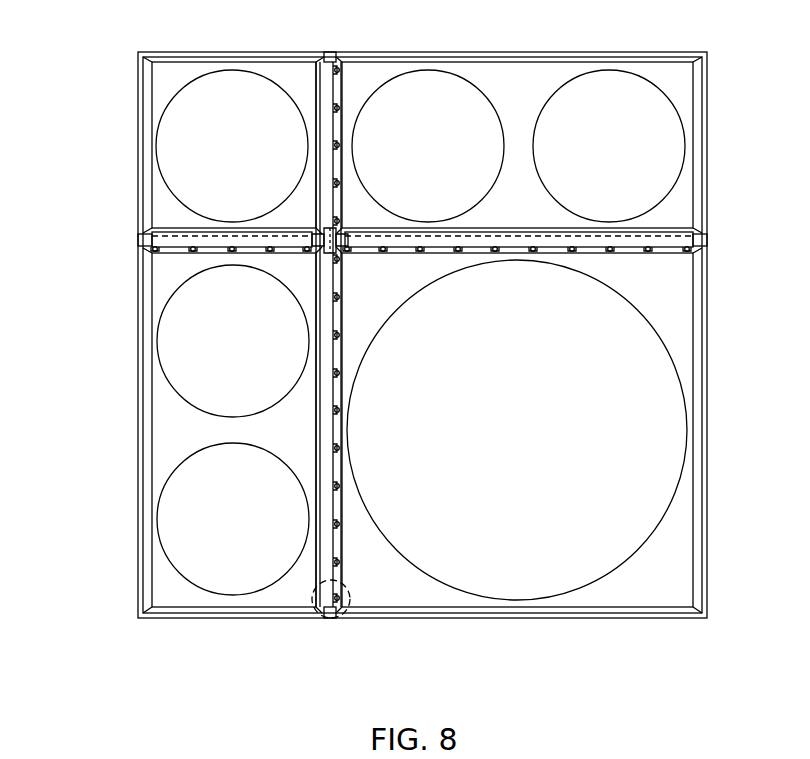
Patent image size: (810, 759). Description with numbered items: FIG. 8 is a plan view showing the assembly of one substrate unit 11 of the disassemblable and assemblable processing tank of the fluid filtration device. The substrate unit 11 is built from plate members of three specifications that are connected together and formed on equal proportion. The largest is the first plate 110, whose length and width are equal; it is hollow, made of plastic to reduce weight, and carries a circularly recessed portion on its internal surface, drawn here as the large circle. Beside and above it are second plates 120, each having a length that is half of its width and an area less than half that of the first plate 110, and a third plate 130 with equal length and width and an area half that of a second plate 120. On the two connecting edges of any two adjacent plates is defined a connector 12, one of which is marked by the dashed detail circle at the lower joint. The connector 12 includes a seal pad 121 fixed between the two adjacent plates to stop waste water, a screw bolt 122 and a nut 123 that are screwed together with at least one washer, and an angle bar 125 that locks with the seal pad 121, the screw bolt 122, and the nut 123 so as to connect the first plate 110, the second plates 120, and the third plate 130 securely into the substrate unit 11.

The substrate unit 11 is at (124, 526).
The connector 12 is at (340, 611).
The first plate 110 is at (705, 319).
The second plate 120 is at (705, 143).
The seal pad 121 is at (342, 62).
The screw bolt 122 is at (316, 373).
The nut 123 is at (340, 440).
The angle bar 125 is at (326, 398).
The third plate 130 is at (138, 168).